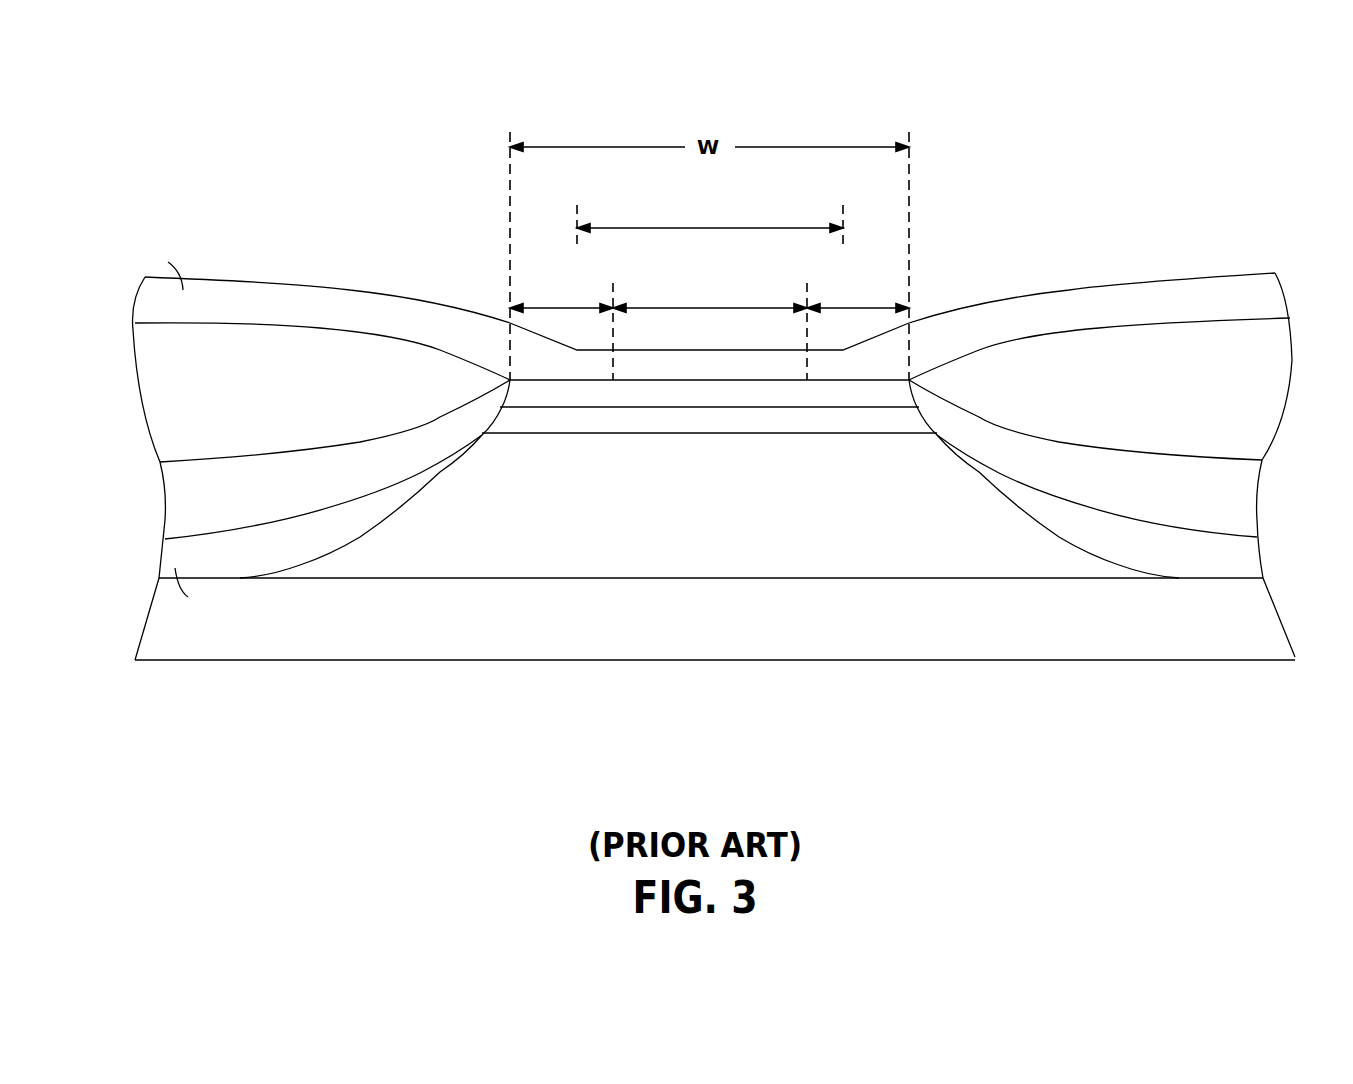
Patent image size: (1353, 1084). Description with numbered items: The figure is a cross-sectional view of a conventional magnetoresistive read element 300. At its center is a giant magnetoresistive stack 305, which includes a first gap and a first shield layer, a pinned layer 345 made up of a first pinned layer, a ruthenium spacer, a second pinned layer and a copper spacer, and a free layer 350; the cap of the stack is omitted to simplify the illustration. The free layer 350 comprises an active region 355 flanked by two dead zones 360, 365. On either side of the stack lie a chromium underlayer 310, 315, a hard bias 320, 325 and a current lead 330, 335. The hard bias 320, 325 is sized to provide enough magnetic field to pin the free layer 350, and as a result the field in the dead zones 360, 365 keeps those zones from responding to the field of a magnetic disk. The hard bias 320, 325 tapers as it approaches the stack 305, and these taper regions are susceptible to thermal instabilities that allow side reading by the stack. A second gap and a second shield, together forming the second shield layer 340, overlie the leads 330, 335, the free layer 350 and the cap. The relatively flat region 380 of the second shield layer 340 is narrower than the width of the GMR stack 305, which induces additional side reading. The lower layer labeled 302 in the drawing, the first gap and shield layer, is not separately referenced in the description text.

The magnetoresistive read element 300 is at (735, 90).
The first gap and shield layer 302 is at (753, 629).
The giant magnetoresistive stack 305 is at (925, 600).
The chromium underlayer 310 is at (200, 569).
The chromium underlayer 315 is at (1214, 569).
The hard bias 320 is at (200, 522).
The hard bias 325 is at (1191, 497).
The current lead 330 is at (199, 417).
The current lead 335 is at (1214, 387).
The second shield layer 340 is at (199, 307).
The pinned layer 345 is at (709, 422).
The free layer 350 is at (709, 395).
The active region 355 is at (710, 294).
The dead zone 360 is at (561, 328).
The dead zone 365 is at (858, 328).
The relatively flat region 380 is at (710, 224).